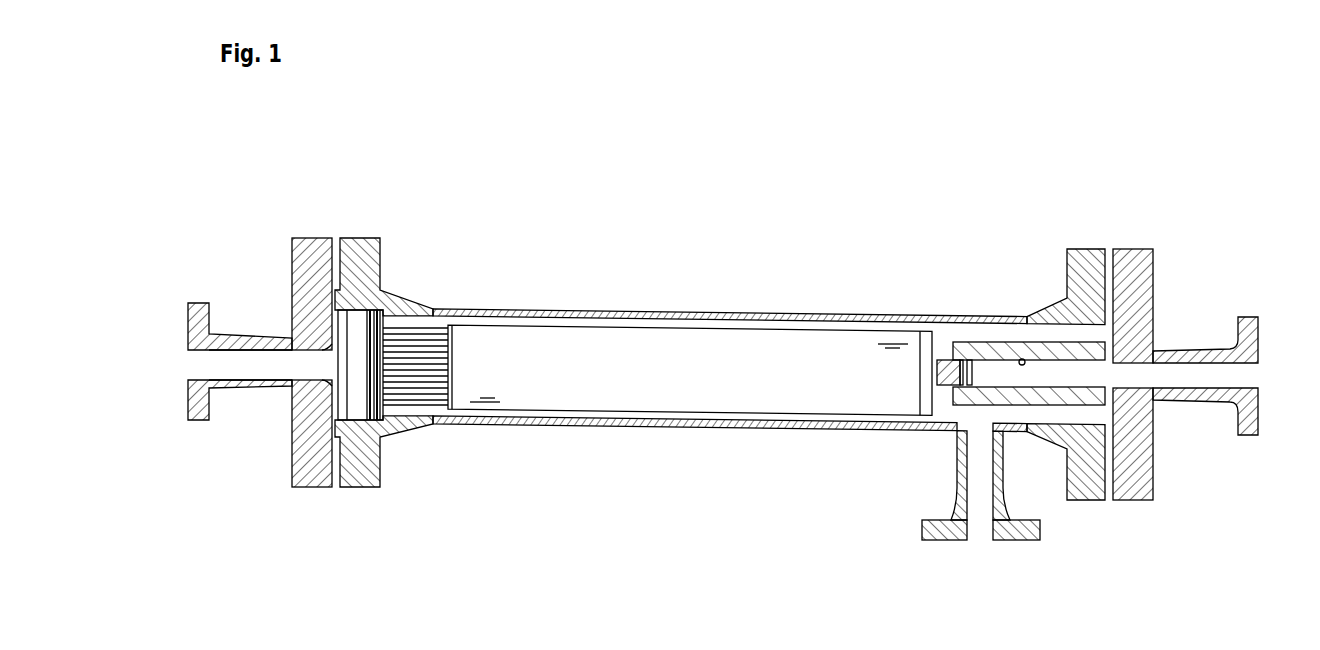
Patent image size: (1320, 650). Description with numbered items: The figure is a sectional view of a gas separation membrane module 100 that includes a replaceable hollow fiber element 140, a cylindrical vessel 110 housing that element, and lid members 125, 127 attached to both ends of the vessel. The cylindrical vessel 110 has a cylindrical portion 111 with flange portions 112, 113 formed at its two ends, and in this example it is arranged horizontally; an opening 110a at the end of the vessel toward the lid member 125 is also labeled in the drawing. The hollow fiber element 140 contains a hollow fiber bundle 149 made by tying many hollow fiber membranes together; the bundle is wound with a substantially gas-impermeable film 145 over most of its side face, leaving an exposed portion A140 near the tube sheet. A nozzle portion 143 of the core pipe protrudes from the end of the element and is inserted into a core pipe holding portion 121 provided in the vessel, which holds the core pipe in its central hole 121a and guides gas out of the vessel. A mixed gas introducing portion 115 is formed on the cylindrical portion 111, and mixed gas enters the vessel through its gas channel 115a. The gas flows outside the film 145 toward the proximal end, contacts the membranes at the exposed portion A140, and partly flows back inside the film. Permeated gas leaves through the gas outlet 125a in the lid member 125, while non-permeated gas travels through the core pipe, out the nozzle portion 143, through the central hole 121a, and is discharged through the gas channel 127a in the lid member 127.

The gas separation membrane module 100 is at (245, 145).
The cylindrical vessel 110 is at (798, 250).
The inlet passage 110a is at (307, 348).
The cylindrical portion 111 is at (692, 311).
The flange portion 112 is at (360, 240).
The flange portion 113 is at (1085, 248).
The mixed gas introducing portion 115 is at (957, 478).
The gas channel 115a is at (982, 530).
The core pipe holding portion 121 is at (987, 341).
The central hole 121a is at (1022, 358).
The lid member 125 is at (312, 240).
The gas outlet 125a is at (188, 352).
The lid member 127 is at (1152, 258).
The gas channel 127a is at (1258, 370).
The hollow fiber element 140 is at (620, 394).
The exposed portion A140 is at (413, 322).
The nozzle portion 143 is at (945, 359).
The film 145 is at (730, 341).
The hollow fiber bundle 149 is at (420, 385).